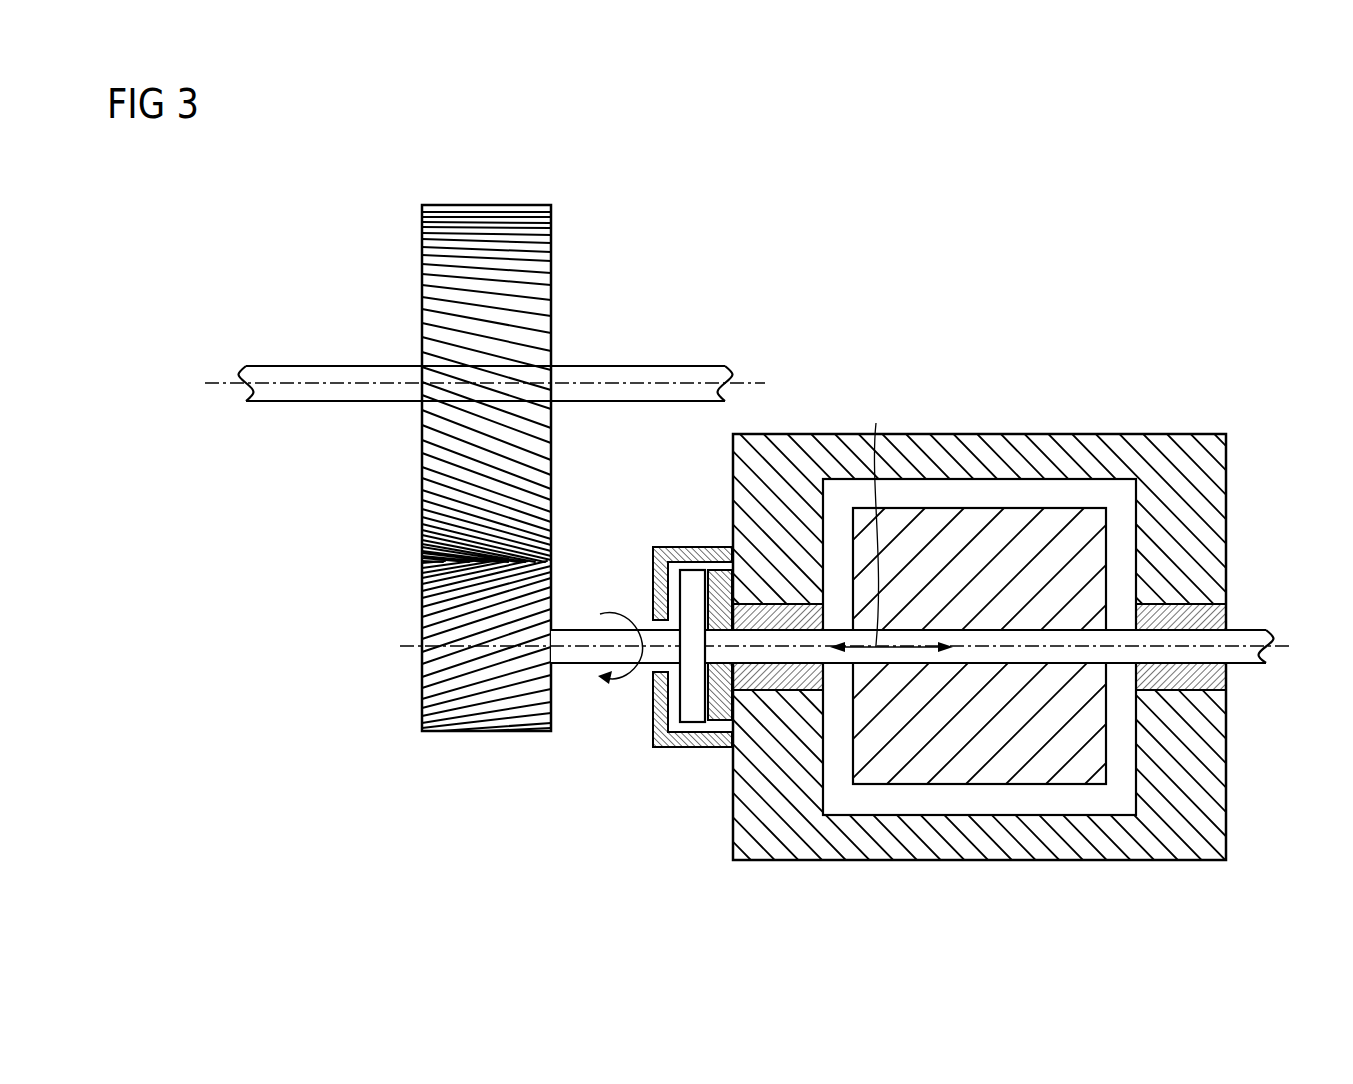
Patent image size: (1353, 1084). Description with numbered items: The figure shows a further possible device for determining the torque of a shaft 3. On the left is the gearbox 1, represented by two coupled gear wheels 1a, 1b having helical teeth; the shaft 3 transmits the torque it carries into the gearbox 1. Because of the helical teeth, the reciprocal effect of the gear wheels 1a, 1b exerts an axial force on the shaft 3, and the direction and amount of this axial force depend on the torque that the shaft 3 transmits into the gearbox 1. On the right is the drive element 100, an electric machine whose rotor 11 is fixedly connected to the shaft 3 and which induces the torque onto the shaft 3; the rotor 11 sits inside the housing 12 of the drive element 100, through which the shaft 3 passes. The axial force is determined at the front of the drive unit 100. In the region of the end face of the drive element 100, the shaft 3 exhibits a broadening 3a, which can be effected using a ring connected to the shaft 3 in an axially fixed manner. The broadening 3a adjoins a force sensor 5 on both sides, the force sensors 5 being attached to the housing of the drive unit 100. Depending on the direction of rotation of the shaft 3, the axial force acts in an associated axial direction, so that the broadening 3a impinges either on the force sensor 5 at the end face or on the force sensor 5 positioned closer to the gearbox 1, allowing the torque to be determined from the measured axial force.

The gearbox 1 is at (511, 465).
The gear wheel 1a is at (487, 715).
The gear wheel 1b is at (483, 210).
The shaft 3 is at (266, 392).
The broadening 3a is at (683, 709).
The force sensor 5 is at (717, 571).
The rotor 11 is at (924, 533).
The housing 12 is at (976, 860).
The drive element 100 is at (833, 648).